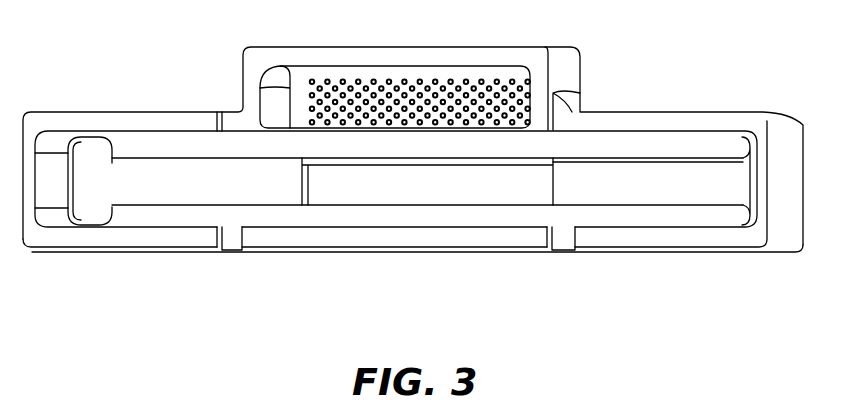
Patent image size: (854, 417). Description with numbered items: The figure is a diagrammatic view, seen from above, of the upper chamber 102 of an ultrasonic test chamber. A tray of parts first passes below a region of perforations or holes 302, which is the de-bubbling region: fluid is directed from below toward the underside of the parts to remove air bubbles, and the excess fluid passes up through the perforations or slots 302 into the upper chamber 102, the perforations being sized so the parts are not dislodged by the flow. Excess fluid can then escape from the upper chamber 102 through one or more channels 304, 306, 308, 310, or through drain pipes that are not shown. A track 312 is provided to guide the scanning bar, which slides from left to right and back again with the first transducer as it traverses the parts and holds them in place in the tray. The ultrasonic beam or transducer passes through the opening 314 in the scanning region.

The upper chamber 102 is at (260, 347).
The region of perforations or holes 302 is at (323, 82).
The channel 304 is at (232, 115).
The channel 306 is at (568, 114).
The channel 308 is at (232, 246).
The channel 310 is at (564, 246).
The track 312 is at (135, 188).
The opening 314 is at (427, 188).